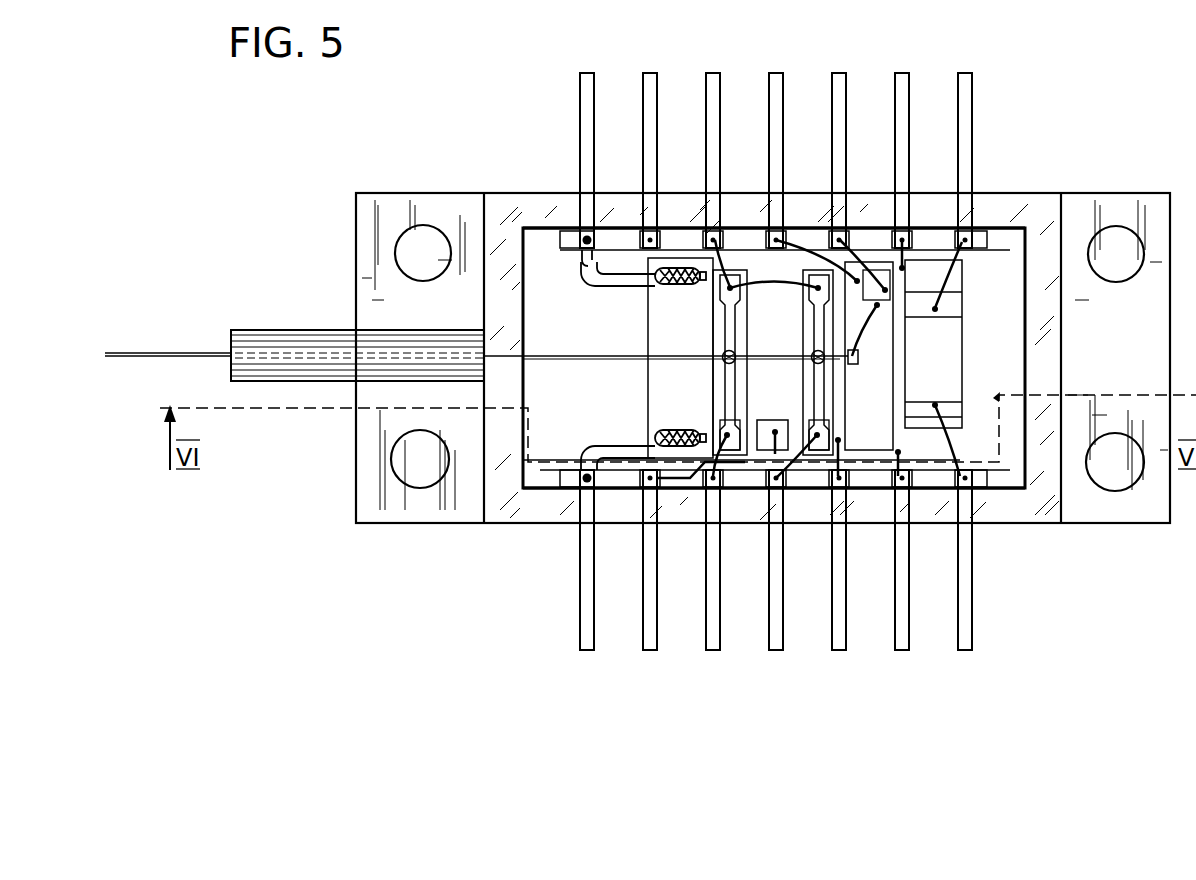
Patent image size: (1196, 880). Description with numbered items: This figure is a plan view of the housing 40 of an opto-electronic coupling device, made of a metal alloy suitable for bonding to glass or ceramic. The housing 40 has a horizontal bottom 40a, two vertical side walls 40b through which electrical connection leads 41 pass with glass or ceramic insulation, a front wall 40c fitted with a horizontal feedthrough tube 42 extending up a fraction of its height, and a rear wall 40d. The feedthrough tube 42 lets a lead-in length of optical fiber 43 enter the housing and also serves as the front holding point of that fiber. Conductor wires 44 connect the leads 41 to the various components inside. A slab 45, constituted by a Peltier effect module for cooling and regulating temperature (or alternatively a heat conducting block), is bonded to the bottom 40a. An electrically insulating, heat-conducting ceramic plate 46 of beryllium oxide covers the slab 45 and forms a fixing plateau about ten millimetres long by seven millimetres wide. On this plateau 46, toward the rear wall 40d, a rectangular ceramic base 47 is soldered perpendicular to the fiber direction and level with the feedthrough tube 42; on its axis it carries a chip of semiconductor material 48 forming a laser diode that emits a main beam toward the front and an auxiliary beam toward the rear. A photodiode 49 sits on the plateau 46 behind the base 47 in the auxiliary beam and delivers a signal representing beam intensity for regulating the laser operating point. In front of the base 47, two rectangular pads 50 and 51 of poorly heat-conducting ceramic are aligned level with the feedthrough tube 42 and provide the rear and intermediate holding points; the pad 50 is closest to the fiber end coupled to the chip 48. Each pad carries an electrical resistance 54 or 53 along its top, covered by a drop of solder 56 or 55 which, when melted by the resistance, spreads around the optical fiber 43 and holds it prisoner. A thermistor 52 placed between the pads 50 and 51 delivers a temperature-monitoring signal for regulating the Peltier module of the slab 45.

The housing 40 is at (540, 170).
The horizontal bottom 40a is at (555, 430).
The vertical side walls 40b is at (812, 216).
The front wall 40c is at (498, 306).
The rear wall 40d is at (1048, 365).
The electrical connection leads 41 is at (590, 80).
The feedthrough tube 42 is at (305, 340).
The lead-in length of optical fiber 43 is at (155, 352).
The conductor wires 44 is at (948, 275).
The slab 45 is at (660, 345).
The ceramic plate 46 is at (764, 268).
The base 47 is at (893, 335).
The chip of semiconductor material 48 is at (858, 358).
The photodiode 49 is at (957, 362).
The rectangular pad 50 is at (820, 452).
The rectangular pad 51 is at (733, 455).
The thermistor 52 is at (775, 430).
The electrical resistance 53 is at (730, 325).
The electrical resistance 54 is at (820, 400).
The drop of solder 55 is at (733, 352).
The drop of solder 56 is at (817, 350).